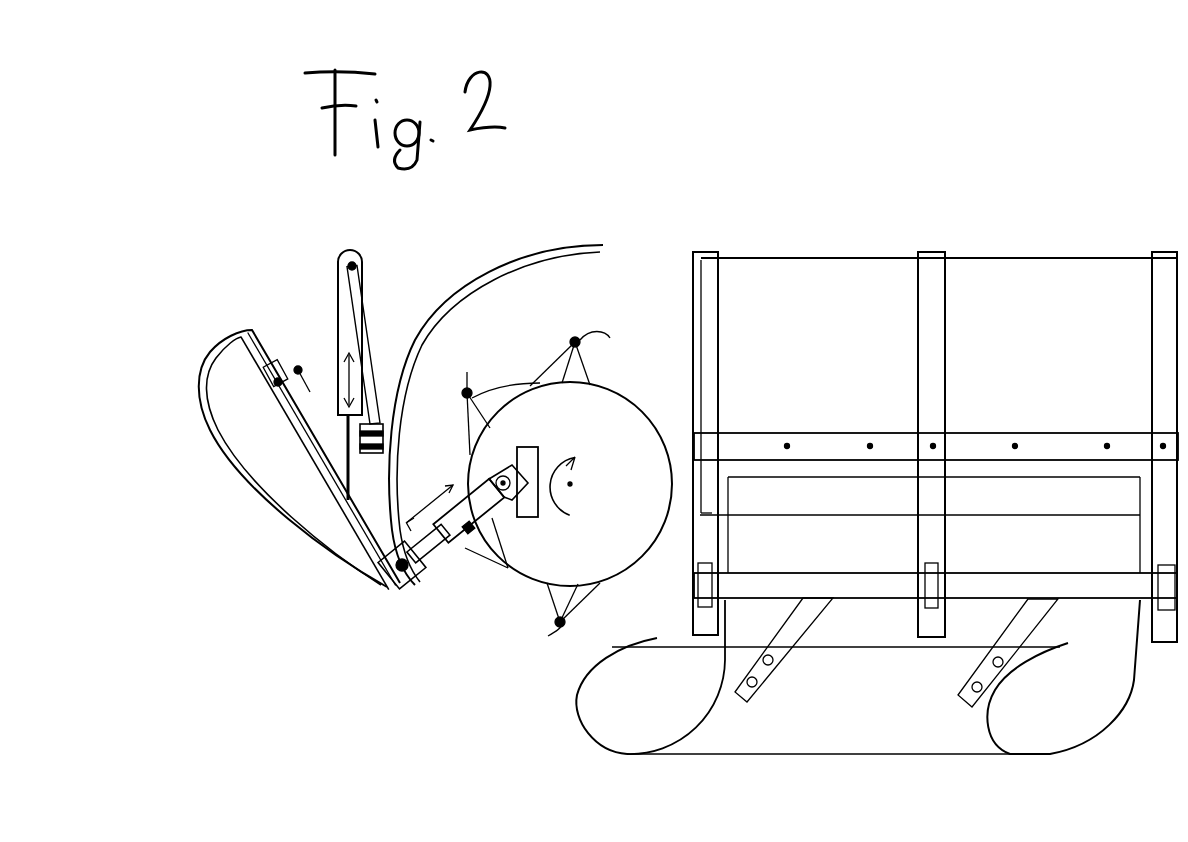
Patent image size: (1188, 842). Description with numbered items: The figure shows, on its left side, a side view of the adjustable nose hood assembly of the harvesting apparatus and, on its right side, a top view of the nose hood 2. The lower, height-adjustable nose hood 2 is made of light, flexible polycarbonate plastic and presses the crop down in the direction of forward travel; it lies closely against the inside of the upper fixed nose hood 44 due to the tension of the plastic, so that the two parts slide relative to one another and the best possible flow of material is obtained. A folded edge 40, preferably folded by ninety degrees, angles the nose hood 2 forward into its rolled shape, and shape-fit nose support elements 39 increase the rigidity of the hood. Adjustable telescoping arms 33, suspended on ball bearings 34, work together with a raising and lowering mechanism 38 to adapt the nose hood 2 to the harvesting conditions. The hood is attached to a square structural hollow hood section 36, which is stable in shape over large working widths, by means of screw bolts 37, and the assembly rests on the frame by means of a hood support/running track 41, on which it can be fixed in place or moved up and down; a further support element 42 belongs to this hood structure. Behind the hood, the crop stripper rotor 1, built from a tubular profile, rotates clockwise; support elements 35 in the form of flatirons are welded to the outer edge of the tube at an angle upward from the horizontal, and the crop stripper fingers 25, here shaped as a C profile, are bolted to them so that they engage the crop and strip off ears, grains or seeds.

The crop stripper rotor 1 is at (614, 490).
The nose hood 2 is at (186, 486).
The crop stripper finger 25 is at (602, 345).
The telescoping arm 33 is at (437, 556).
The ball bearing 34 is at (512, 550).
The support element, flatiron 35 is at (562, 635).
The square structural hollow hood section 36 is at (390, 582).
The screw bolts 37 is at (1153, 437).
The raising and lowering mechanism 38 is at (345, 340).
The nose support element 39 is at (290, 483).
The folded edge 40 is at (440, 590).
The hood support/running track 41 is at (930, 305).
The support element 42 is at (557, 360).
The upper fixed nose hood 44 is at (490, 268).